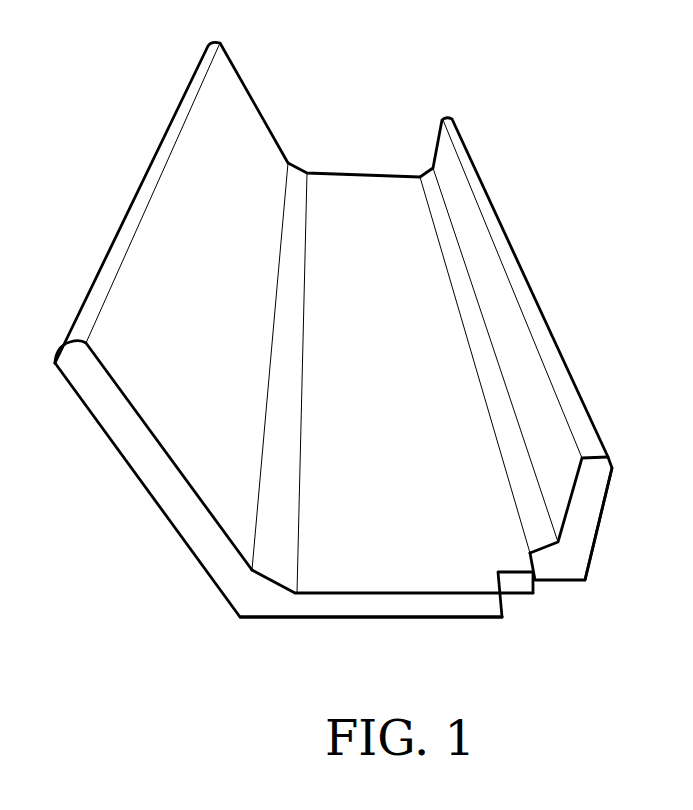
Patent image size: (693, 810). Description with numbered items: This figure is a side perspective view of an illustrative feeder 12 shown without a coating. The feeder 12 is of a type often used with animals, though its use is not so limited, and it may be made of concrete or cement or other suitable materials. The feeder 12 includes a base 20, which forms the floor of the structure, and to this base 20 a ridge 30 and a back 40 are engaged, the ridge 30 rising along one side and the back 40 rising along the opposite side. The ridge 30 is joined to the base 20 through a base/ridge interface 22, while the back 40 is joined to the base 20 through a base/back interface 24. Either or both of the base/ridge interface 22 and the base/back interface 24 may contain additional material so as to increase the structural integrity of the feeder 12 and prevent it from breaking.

The feeder 12 is at (567, 193).
The base 20 is at (370, 200).
The base/ridge interface 22 is at (552, 567).
The base/back interface 24 is at (259, 597).
The ridge 30 is at (587, 500).
The back 40 is at (152, 467).